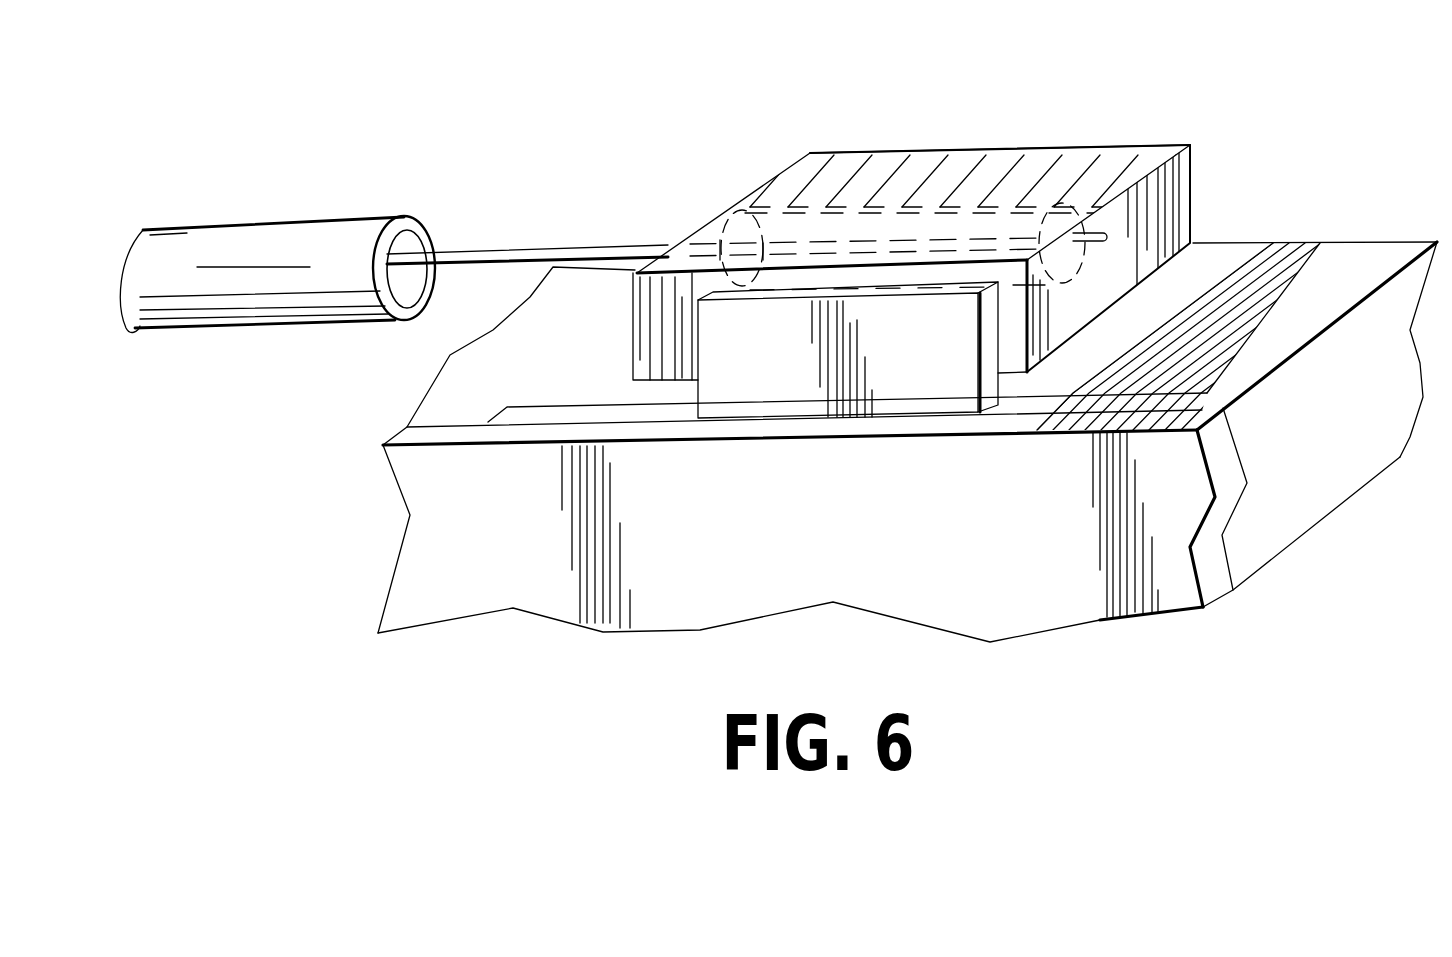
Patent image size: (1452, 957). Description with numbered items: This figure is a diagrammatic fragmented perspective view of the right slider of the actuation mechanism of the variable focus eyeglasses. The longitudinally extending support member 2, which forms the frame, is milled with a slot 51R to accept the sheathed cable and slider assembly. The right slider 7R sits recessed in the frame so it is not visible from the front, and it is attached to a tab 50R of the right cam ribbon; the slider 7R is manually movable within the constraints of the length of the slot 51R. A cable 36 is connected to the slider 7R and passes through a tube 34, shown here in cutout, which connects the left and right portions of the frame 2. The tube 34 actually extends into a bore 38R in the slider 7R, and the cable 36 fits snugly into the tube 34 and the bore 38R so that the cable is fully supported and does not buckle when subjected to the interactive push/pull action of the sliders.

The support member 2 is at (1333, 238).
The right slider 7R is at (1027, 143).
The tube 34 is at (287, 235).
The cable 36 is at (495, 250).
The bore 38R is at (747, 210).
The tab 50R is at (783, 375).
The slot 51R is at (1185, 395).